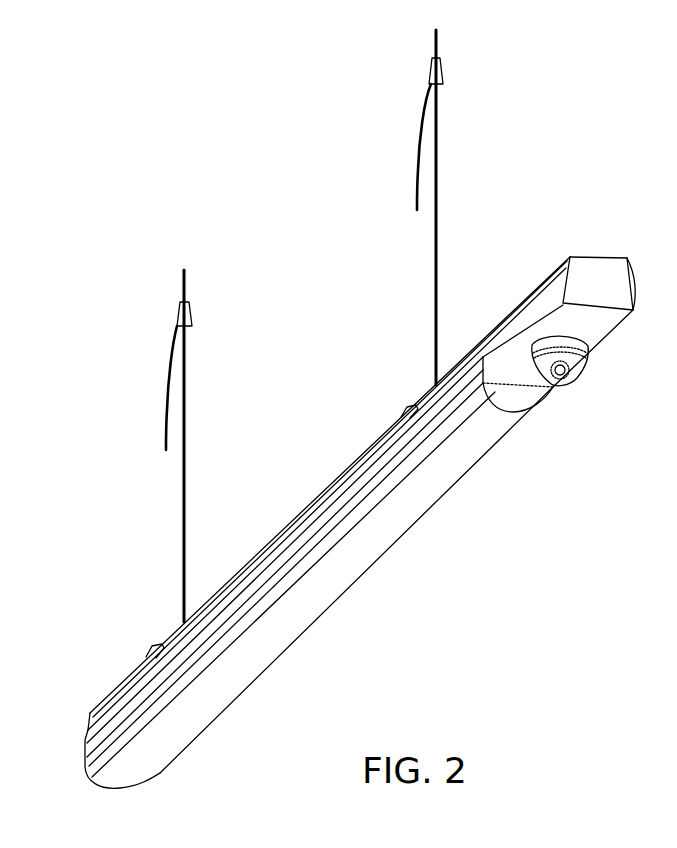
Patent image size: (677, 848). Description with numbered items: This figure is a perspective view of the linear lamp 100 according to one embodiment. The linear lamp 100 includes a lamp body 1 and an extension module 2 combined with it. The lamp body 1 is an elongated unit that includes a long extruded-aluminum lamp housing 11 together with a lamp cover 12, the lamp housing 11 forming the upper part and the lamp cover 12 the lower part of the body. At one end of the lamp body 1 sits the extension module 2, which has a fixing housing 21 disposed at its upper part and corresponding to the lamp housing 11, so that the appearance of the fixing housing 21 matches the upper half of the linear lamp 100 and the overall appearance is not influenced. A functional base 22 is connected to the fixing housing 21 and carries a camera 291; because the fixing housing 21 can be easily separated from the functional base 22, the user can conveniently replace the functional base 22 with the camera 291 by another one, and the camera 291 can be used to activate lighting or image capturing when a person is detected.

The linear lamp 100 is at (313, 288).
The lamp body 1 is at (359, 546).
The lamp housing 11 is at (303, 517).
The lamp cover 12 is at (300, 622).
The extension module 2 is at (517, 283).
The fixing housing 21 is at (556, 252).
The functional base 22 is at (594, 331).
The camera 291 is at (570, 378).